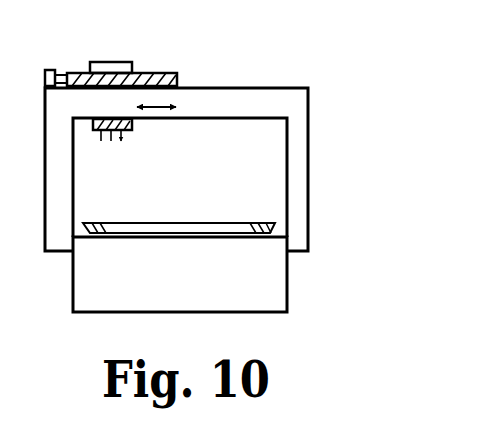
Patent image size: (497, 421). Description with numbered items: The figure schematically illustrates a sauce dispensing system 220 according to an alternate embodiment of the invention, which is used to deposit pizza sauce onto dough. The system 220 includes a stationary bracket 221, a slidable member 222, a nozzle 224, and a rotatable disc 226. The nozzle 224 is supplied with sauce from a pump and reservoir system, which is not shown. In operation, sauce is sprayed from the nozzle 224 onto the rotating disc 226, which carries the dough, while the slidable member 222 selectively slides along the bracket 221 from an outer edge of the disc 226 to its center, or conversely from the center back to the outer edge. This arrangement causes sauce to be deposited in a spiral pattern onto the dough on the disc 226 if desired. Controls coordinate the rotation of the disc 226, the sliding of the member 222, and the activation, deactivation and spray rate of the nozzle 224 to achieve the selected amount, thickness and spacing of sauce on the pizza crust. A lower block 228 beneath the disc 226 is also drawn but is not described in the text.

The sauce dispensing system 220 is at (340, 105).
The stationary bracket 221 is at (274, 88).
The slidable member 222 is at (131, 67).
The nozzle 224 is at (139, 132).
The rotatable disc 226 is at (238, 224).
The support block 228 is at (288, 276).